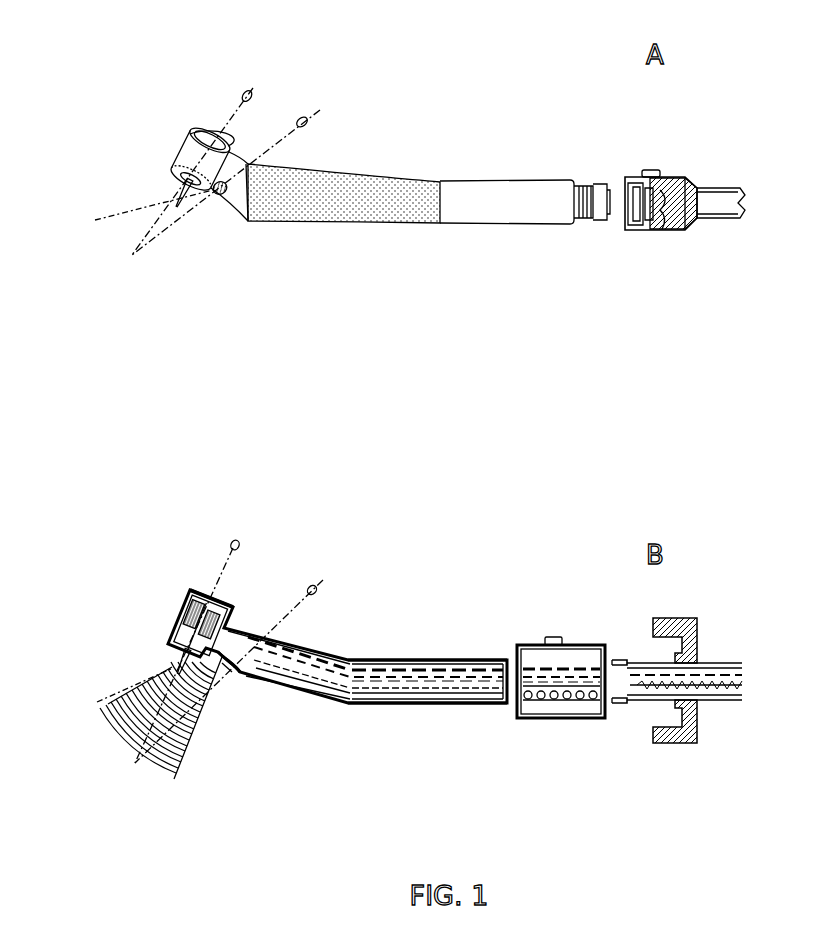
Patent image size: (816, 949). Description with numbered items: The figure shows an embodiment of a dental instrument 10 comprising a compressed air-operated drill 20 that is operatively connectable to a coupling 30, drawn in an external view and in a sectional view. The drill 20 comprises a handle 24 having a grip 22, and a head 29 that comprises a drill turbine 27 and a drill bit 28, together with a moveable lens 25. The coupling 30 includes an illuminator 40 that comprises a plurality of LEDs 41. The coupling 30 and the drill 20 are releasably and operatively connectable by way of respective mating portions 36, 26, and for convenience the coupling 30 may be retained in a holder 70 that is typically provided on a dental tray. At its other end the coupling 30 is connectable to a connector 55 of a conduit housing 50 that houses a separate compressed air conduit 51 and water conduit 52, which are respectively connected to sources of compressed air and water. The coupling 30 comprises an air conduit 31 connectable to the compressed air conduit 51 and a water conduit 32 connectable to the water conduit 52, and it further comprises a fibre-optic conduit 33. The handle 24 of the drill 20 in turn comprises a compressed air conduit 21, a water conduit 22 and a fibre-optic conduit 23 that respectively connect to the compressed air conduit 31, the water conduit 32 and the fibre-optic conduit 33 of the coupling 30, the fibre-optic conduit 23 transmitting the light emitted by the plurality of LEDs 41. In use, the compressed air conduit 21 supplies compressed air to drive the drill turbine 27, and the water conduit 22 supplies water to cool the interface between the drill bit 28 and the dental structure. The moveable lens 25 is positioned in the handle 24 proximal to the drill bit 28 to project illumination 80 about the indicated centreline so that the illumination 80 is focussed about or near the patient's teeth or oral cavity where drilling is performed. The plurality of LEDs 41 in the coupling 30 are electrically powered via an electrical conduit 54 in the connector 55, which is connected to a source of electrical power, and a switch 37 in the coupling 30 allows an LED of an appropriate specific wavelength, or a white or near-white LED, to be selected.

In FIG. 1A, the dental instrument 10 is at (440, 98).
In FIG. 1B, the dental instrument 10 is at (440, 563).
In FIG. 1A, the drill 20 is at (326, 240).
In FIG. 1B, the drill 20 is at (304, 724).
In FIG. 1B, the compressed air conduit 21 is at (395, 662).
In FIG. 1A, the water conduit 22 is at (385, 205).
In FIG. 1B, the water conduit 22 is at (405, 678).
In FIG. 1B, the fibre-optic conduit 23 is at (448, 690).
In FIG. 1A, the handle 24 is at (500, 182).
In FIG. 1B, the handle 24 is at (368, 703).
In FIG. 1A, the moveable lens 25 is at (231, 197).
In FIG. 1B, the moveable lens 25 is at (240, 672).
In FIG. 1A, the mating portion 26 is at (605, 183).
In FIG. 1A, the drill turbine 27 is at (186, 142).
In FIG. 1B, the drill turbine 27 is at (186, 610).
In FIG. 1A, the drill bit 28 is at (170, 196).
In FIG. 1B, the drill bit 28 is at (172, 656).
In FIG. 1A, the head 29 is at (205, 122).
In FIG. 1B, the head 29 is at (192, 587).
In FIG. 1A, the coupling 30 is at (658, 262).
In FIG. 1B, the coupling 30 is at (566, 740).
In FIG. 1B, the air conduit 31 is at (565, 668).
In FIG. 1B, the water conduit 32 is at (545, 668).
In FIG. 1B, the fibre-optic conduit 33 is at (604, 705).
In FIG. 1A, the mating portion 36 is at (622, 205).
In FIG. 1A, the switch 37 is at (660, 170).
In FIG. 1B, the switch 37 is at (558, 637).
In FIG. 1B, the illuminator 40 is at (536, 603).
In FIG. 1B, the plurality of LEDs 41 is at (547, 700).
In FIG. 1A, the conduit housing 50 is at (718, 205).
In FIG. 1B, the conduit housing 50 is at (705, 663).
In FIG. 1A, the compressed air conduit 51 is at (690, 225).
In FIG. 1B, the compressed air conduit 51 is at (738, 660).
In FIG. 1B, the water conduit 52 is at (740, 678).
In FIG. 1B, the electrical conduit 54 is at (742, 690).
In FIG. 1B, the connector 55 is at (620, 660).
In FIG. 1B, the holder 70 is at (690, 745).
In FIG. 1B, the illumination 80 is at (185, 750).